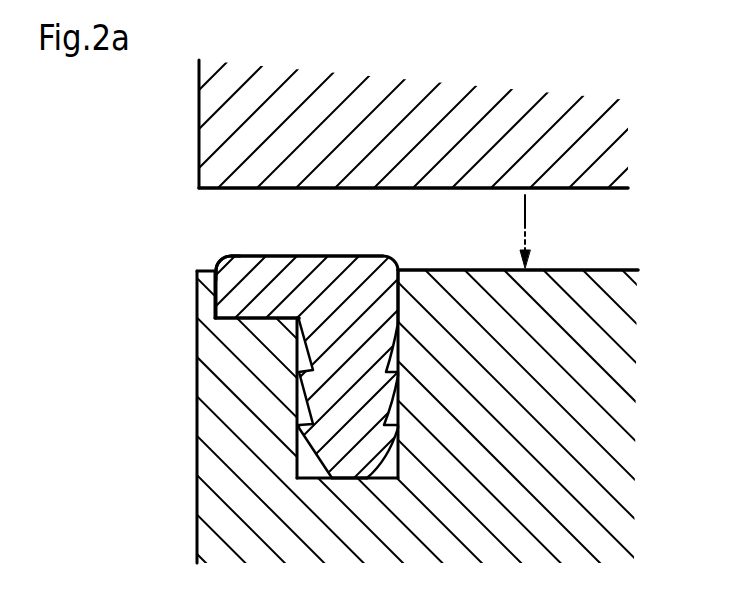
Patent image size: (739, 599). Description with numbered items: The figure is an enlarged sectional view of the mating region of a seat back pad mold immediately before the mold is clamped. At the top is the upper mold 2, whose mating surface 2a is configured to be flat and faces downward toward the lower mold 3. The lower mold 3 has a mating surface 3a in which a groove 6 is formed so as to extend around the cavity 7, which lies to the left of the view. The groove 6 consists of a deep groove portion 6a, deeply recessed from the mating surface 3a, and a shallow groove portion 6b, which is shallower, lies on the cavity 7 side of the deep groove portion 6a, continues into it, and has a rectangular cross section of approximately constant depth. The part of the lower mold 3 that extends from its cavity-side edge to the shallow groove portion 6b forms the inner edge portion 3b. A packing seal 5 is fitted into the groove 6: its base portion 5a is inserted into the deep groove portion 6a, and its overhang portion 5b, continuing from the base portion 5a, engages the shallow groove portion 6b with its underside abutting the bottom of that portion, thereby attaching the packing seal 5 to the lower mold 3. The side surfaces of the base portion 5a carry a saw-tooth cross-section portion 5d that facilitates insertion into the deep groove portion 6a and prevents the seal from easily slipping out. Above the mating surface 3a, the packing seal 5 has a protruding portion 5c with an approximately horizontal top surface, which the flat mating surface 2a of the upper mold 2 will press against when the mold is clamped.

The upper mold 2 is at (625, 147).
The mating surface of the upper mold 2a is at (597, 190).
The lower mold 3 is at (627, 382).
The mating surface of the lower mold 3a is at (600, 270).
The inner edge portion 3b is at (200, 269).
The packing seal 5 is at (309, 376).
The base portion 5a is at (348, 467).
The overhang portion 5b is at (247, 255).
The protruding portion 5c is at (293, 256).
The saw-tooth cross-section portion 5d is at (298, 390).
The groove 6 is at (403, 399).
The deep groove portion 6a is at (399, 468).
The shallow groove portion 6b is at (237, 318).
The cavity 7 is at (87, 437).